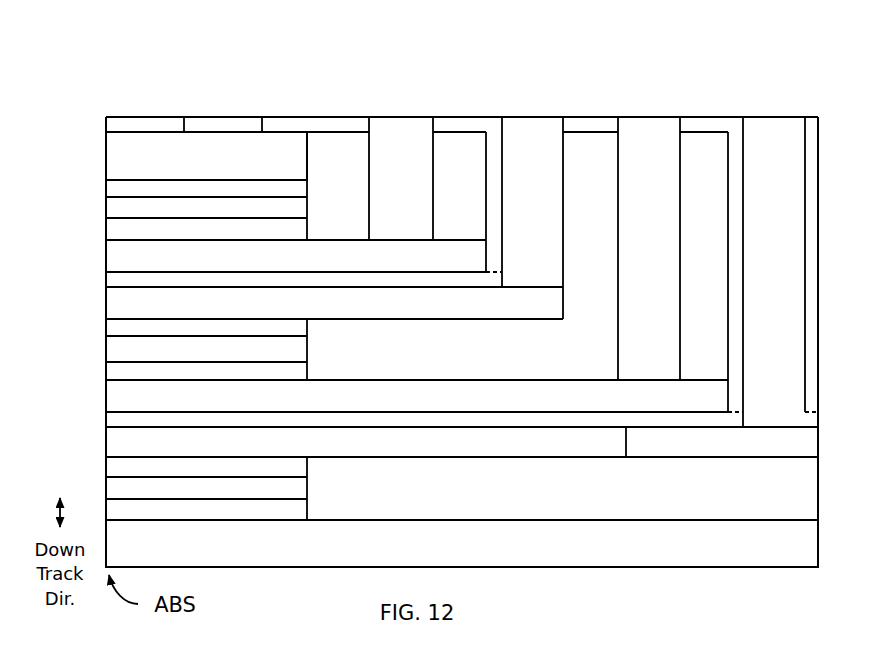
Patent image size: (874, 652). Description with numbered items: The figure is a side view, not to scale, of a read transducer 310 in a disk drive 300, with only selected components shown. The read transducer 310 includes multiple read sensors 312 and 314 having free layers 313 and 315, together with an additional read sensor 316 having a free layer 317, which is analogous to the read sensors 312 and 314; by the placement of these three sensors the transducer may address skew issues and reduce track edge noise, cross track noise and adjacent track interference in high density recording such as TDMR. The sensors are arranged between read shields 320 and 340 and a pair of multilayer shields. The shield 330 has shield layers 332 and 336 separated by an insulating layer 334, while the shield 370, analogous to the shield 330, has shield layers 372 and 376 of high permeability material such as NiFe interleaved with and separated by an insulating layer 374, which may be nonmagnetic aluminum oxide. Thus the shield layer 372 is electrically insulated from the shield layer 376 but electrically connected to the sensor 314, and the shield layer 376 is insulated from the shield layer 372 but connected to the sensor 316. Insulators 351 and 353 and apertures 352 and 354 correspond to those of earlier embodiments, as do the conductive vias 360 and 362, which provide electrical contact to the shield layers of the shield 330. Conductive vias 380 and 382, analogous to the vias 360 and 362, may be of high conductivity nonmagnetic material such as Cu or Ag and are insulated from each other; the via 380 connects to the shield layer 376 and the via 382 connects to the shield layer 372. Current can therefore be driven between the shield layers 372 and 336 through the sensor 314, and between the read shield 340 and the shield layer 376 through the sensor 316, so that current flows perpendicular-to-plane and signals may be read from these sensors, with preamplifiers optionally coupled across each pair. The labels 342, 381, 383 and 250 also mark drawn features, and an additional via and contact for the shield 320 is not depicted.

The disk drive 300 is at (63, 37).
The read transducer 310 is at (462, 342).
The read sensor 312 is at (90, 488).
The free layer 313 is at (206, 488).
The read sensor 314 is at (90, 335).
The free layer 315 is at (206, 349).
The additional read sensor 316 is at (90, 210).
The free layer 317 is at (206, 209).
The read shield 320 is at (462, 539).
The shield 330 is at (97, 418).
The shield layer 332 is at (462, 442).
The insulating layer 334 is at (626, 457).
The shield layer 336 is at (417, 394).
The read shield 340 is at (206, 156).
The insulating layer 342 is at (231, 117).
The insulator 351 is at (760, 584).
The aperture 352 is at (656, 107).
The insulator 353 is at (352, 117).
The aperture 354 is at (772, 105).
The conductive via 360 is at (649, 248).
The conductive via 362 is at (774, 272).
The shield 370 is at (90, 277).
The shield layer 372 is at (334, 303).
The insulating layer 374 is at (447, 288).
The shield layer 376 is at (245, 256).
The conductive via 380 is at (401, 178).
The via contact 381 is at (402, 108).
The conductive via 382 is at (532, 218).
The via contact 383 is at (520, 108).
The insulator 250 is at (466, 491).